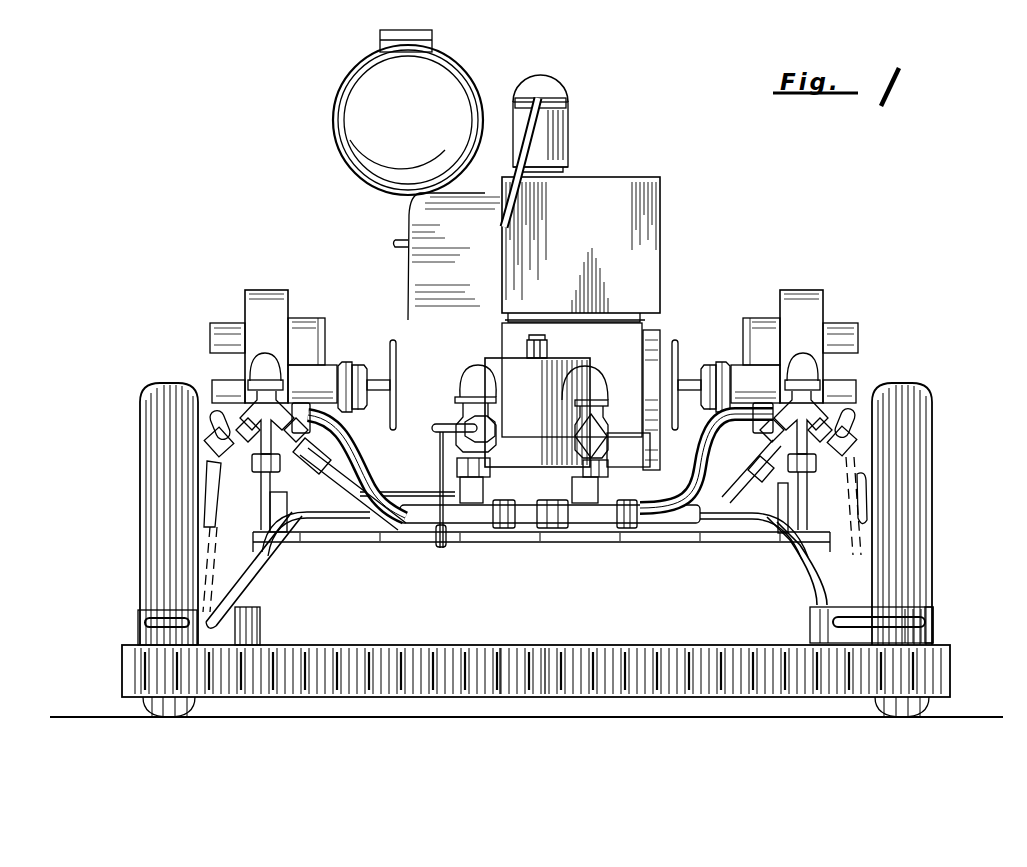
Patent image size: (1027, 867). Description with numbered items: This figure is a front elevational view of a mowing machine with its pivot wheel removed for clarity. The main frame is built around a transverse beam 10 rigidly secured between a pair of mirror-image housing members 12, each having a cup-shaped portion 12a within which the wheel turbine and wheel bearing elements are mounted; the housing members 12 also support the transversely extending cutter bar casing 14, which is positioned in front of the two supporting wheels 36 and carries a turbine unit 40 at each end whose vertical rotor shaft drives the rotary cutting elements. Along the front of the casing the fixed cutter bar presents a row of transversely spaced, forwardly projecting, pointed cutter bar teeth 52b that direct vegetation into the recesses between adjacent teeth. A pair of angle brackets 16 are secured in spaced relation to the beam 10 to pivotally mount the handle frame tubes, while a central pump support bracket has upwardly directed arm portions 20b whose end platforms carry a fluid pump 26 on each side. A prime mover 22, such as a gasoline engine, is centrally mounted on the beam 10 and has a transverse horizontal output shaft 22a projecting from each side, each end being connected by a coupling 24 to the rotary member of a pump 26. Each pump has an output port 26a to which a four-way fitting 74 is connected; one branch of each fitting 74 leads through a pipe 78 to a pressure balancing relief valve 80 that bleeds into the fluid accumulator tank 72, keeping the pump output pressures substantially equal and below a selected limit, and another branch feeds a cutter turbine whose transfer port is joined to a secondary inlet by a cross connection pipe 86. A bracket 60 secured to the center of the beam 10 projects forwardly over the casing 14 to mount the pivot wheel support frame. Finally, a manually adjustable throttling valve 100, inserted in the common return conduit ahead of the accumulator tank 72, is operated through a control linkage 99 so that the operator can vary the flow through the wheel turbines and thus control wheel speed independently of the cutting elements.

The transverse beam 10 is at (628, 542).
The housing member 12 is at (255, 590).
The cup-shaped portion 12a is at (252, 418).
The cutter bar casing 14 is at (958, 650).
The angle bracket 16 is at (288, 500).
The arm portion 20b is at (337, 475).
The prime mover 22 is at (663, 378).
The output shaft 22a is at (382, 362).
The coupling 24 is at (382, 414).
The fluid pump 26 is at (260, 285).
The output port 26a is at (250, 410).
The wheel 36 is at (172, 390).
The turbine unit 40 is at (238, 624).
The cutter bar teeth 52b is at (510, 640).
The bracket 60 is at (528, 540).
The fluid accumulator tank 72 is at (545, 368).
The four-way fitting 74 is at (235, 408).
The pipe 78 is at (392, 530).
The pressure balancing relief valve 80 is at (603, 412).
The cross connection pipe 86 is at (148, 618).
The control linkage 99 is at (432, 428).
The throttling valve 100 is at (491, 421).